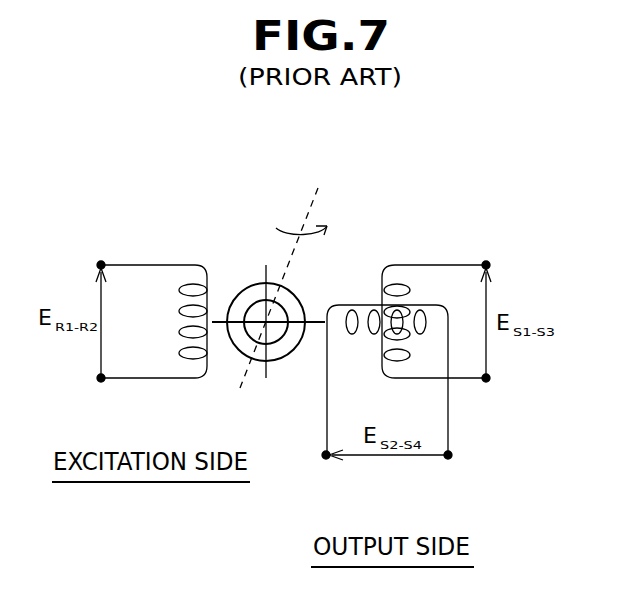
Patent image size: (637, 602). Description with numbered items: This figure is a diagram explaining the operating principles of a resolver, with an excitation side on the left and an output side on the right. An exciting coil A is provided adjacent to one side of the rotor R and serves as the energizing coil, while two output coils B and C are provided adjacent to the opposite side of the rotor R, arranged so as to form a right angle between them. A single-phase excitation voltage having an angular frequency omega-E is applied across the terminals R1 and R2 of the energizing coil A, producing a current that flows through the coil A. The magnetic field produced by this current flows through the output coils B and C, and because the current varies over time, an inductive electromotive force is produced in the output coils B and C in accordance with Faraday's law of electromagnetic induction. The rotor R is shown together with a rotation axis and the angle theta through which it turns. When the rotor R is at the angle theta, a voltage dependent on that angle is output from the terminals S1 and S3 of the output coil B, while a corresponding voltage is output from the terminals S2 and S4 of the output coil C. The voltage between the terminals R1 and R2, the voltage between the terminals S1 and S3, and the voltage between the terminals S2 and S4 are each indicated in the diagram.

The exciting coil A is at (163, 265).
The output coil B is at (424, 265).
The output coil C is at (448, 345).
The rotor R is at (300, 188).
The terminal R1 is at (86, 266).
The terminal R2 is at (86, 379).
The terminal S1 is at (501, 267).
The terminal S2 is at (326, 471).
The terminal S3 is at (501, 379).
The terminal S4 is at (449, 471).